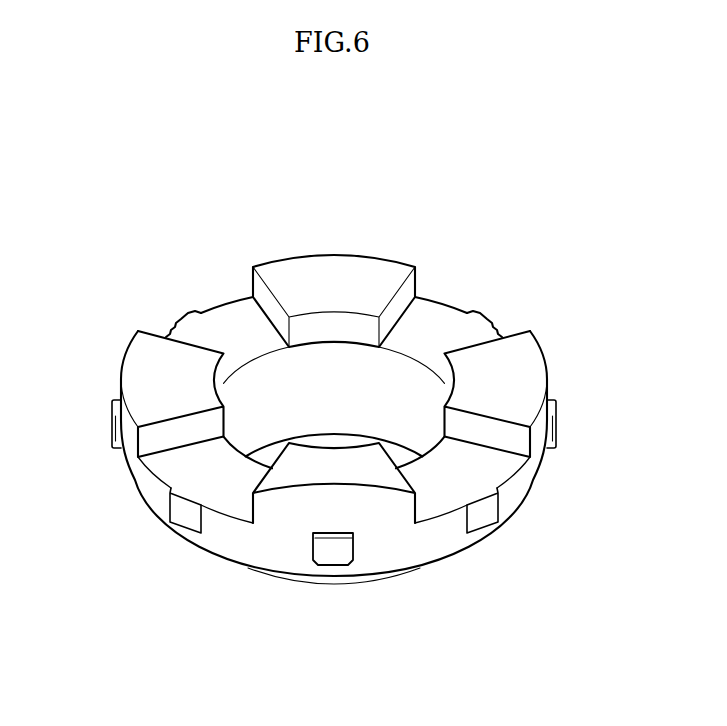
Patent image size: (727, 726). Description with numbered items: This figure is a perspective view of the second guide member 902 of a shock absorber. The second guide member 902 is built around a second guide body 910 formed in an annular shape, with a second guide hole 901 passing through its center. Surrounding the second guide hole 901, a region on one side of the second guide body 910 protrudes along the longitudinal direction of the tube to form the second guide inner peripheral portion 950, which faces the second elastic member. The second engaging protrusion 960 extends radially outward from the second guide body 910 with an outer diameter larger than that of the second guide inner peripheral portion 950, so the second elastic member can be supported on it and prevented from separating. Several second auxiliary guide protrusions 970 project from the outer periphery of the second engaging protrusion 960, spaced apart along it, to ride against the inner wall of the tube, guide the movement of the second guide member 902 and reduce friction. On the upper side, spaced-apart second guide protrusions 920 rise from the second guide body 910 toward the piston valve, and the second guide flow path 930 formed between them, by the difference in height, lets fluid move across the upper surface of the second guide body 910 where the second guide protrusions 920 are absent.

The second guide hole 901 is at (343, 380).
The second guide member 902 is at (82, 194).
The second guide body 910 is at (282, 383).
The second guide protrusion 920 is at (143, 372).
The second guide flow path 930 is at (190, 473).
The second guide inner peripheral portion 950 is at (332, 584).
The second engaging protrusion 960 is at (533, 497).
The second auxiliary guide protrusion 970 is at (487, 318).